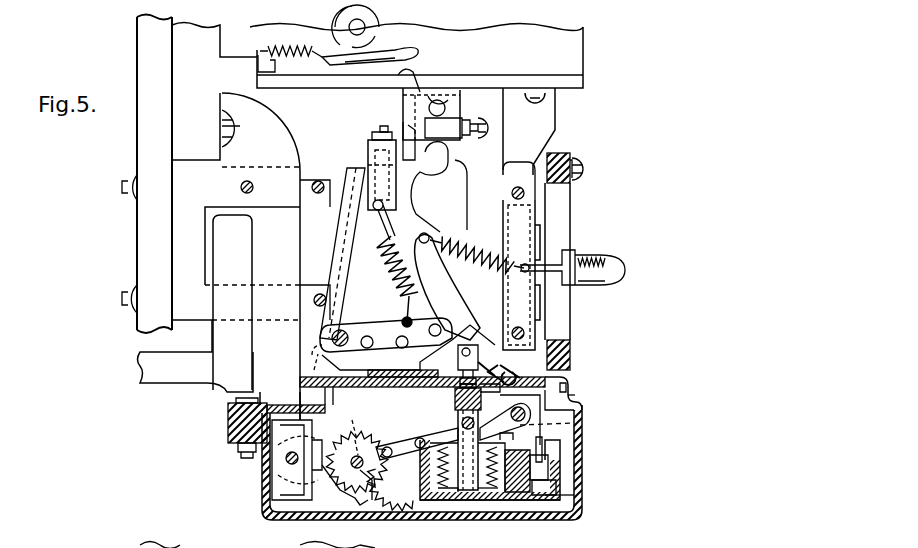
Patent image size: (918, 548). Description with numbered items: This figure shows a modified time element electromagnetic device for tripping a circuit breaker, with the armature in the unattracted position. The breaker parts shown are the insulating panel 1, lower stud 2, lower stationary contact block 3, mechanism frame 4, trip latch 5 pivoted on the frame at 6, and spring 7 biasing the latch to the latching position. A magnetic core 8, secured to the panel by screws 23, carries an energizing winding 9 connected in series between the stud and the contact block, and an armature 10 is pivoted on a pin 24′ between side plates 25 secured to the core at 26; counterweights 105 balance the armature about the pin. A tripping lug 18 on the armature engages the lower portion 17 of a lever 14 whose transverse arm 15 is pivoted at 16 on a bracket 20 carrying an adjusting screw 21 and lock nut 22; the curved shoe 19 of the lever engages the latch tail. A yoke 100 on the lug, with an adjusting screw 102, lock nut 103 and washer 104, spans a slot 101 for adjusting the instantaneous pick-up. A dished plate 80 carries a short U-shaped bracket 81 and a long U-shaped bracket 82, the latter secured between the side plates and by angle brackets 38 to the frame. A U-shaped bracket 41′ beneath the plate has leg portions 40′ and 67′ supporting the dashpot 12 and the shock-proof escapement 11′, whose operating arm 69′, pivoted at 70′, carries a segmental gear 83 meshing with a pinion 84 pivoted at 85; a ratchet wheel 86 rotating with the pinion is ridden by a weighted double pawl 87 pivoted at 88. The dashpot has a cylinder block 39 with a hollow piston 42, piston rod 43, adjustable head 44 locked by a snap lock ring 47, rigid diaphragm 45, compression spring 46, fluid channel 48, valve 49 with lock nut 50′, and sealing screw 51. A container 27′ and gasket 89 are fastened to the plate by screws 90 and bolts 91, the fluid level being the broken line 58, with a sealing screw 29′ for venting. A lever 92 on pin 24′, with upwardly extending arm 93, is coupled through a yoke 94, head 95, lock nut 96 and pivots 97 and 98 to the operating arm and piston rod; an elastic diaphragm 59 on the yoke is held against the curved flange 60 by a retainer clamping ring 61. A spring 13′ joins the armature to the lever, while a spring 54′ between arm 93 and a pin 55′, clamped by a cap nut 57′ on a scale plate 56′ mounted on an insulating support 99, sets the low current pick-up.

The mounting base or panel 1 is at (137, 233).
The lower stud 2 is at (165, 378).
The lower stationary contact block 3 is at (180, 132).
The mechanism frame 4 is at (583, 60).
The trip latch 5 is at (385, 52).
The pivot 6 is at (366, 24).
The spring 7 is at (278, 48).
The magnetic core 8 is at (182, 250).
The energizing winding 9 is at (222, 263).
The armature 10 is at (350, 168).
The inertia means 11′ is at (373, 485).
The dashpot 12 is at (542, 455).
The spring 13′ is at (400, 240).
The lever 14 is at (402, 103).
The transverse arm 15 is at (428, 90).
The pivot 16 is at (447, 108).
The lower portion 17 is at (415, 145).
The tripping lug 18 is at (437, 168).
The shoe 19 is at (412, 73).
The bracket 20 is at (448, 140).
The screw 21 is at (484, 136).
The lock nut 22 is at (467, 136).
The screws 23 is at (125, 196).
The pin 24′ is at (346, 333).
The side plates 25 is at (467, 203).
The securing means 26 is at (240, 186).
The container 27′ is at (584, 458).
The sealing screw 29′ is at (577, 392).
The angle brackets 38 is at (546, 130).
The cylinder block 39 is at (552, 468).
The leg portions 40′ is at (524, 415).
The U-shaped bracket 41′ is at (380, 388).
The piston 42 is at (488, 500).
The piston rod 43 is at (468, 450).
The head 44 is at (450, 460).
The rigid diaphragm 45 is at (452, 500).
The compression spring 46 is at (475, 500).
The snap lock ring 47 is at (525, 456).
The channel 48 is at (528, 502).
The valve 49 is at (550, 488).
The lock nut 50′ is at (549, 457).
The screw 51 is at (562, 497).
The spring 54′ is at (470, 245).
The pin 55′ is at (523, 264).
The scale plate 56′ is at (583, 169).
The cap nut 57′ is at (603, 256).
The broken line 58 is at (580, 424).
The elastic diaphragm 59 is at (493, 366).
The upstanding curved flange 60 is at (491, 394).
The retainer clamping ring 61 is at (516, 372).
The leg portions 67′ is at (392, 446).
The operating arm 69′ is at (505, 421).
The pivot 70′ is at (530, 412).
The dished plate 80 is at (570, 384).
The short U-shaped bracket 81 is at (387, 358).
The long U-shaped bracket 82 is at (507, 293).
The segmental gear 83 is at (369, 471).
The pinion 84 is at (359, 452).
The pivot 85 is at (351, 461).
The ratchet wheel 86 is at (345, 485).
The double pawl 87 is at (305, 468).
The pivot 88 is at (292, 452).
The gasket 89 is at (582, 410).
The screws 90 is at (580, 400).
The bolts 91 is at (240, 458).
The lever 92 is at (386, 335).
The arm 93 is at (444, 286).
The yoke 94 is at (455, 397).
The head 95 is at (463, 340).
The lock nut 96 is at (477, 372).
The pivot 97 is at (462, 423).
The pivot 98 is at (469, 349).
The insulating support 99 is at (563, 154).
The yoke 100 is at (384, 205).
The slot 101 is at (383, 232).
The adjusting screw 102 is at (389, 128).
The lock nut 103 is at (378, 134).
The washer 104 is at (372, 145).
The counterweights 105 is at (316, 370).